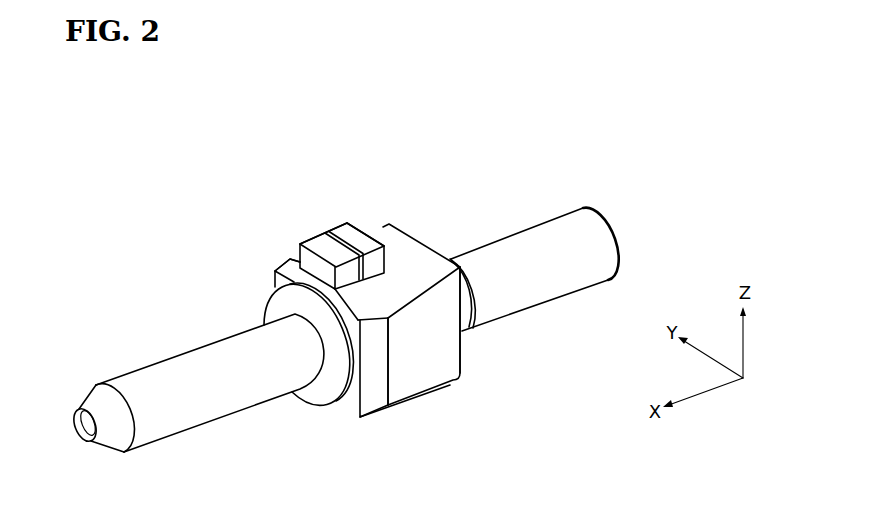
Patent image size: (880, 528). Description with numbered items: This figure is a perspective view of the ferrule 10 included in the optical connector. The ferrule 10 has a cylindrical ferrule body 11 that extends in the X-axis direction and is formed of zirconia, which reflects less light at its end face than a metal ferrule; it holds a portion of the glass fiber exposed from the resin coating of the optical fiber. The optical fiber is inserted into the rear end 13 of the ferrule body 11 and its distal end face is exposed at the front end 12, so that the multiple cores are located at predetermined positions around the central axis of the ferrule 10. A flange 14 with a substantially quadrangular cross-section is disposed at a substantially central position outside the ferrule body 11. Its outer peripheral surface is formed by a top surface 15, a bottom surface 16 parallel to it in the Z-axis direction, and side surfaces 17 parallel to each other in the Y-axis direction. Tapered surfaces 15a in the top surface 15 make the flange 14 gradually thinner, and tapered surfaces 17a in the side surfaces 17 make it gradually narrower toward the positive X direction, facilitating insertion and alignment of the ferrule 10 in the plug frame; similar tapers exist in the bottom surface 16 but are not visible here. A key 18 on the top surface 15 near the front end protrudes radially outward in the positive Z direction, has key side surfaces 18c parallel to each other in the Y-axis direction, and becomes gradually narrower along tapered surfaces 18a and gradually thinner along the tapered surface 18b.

The ferrule 10 is at (211, 238).
The ferrule body 11 is at (223, 409).
The front end 12 is at (80, 426).
The rear end 13 is at (597, 244).
The flange 14 is at (419, 401).
The top surface 15 is at (409, 249).
The tapered surfaces 15a is at (351, 291).
The bottom surface 16 is at (334, 407).
The side surfaces 17 is at (272, 268).
The tapered surfaces 17a is at (372, 388).
The key 18 is at (335, 206).
The tapered surfaces 18a is at (319, 247).
The tapered surface 18b is at (299, 246).
The key side surfaces 18c is at (375, 259).